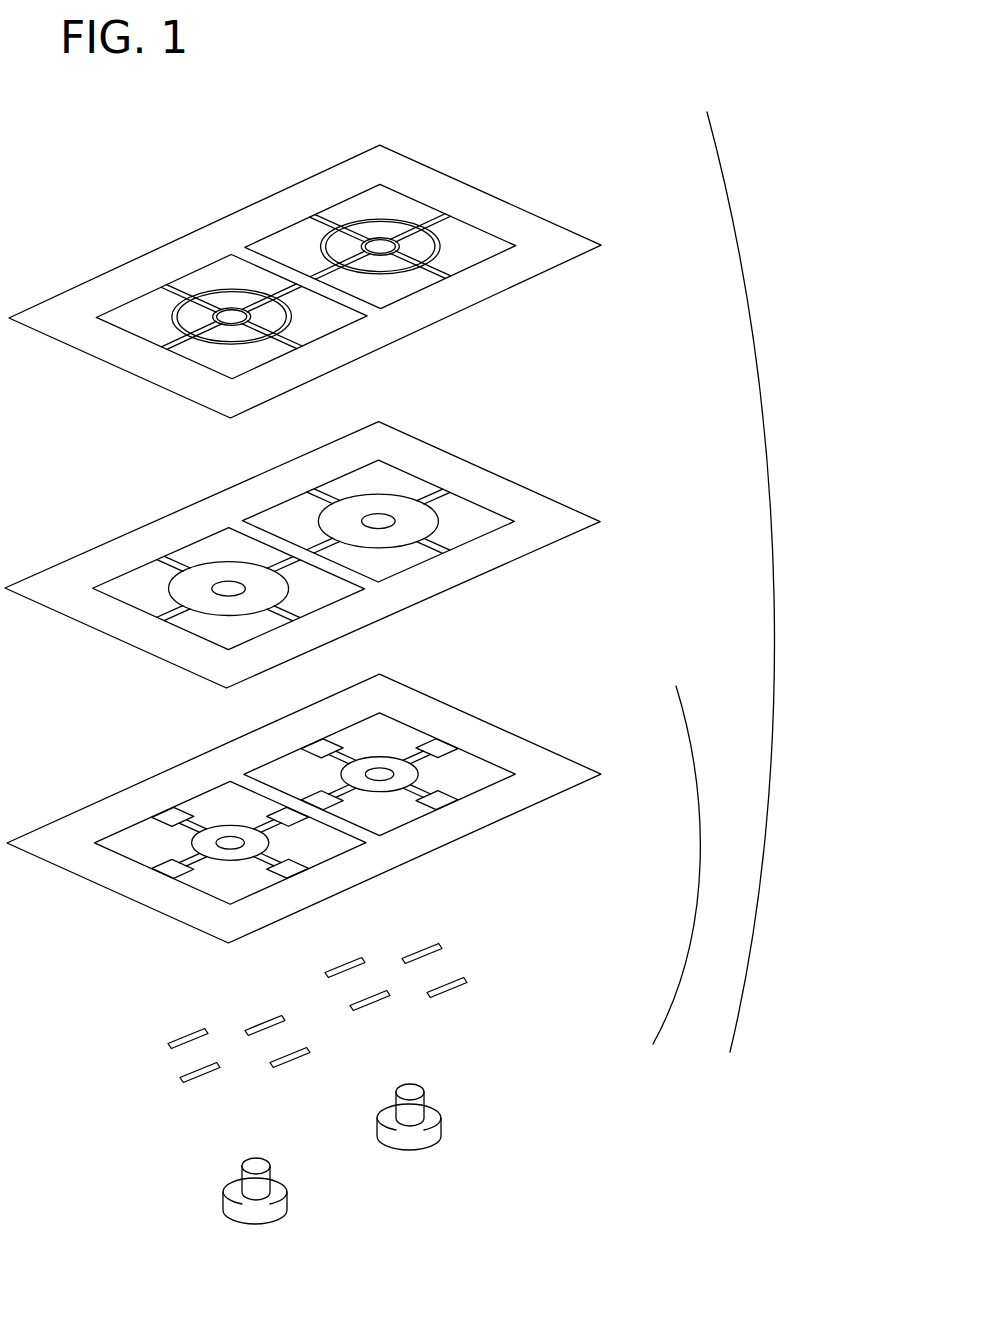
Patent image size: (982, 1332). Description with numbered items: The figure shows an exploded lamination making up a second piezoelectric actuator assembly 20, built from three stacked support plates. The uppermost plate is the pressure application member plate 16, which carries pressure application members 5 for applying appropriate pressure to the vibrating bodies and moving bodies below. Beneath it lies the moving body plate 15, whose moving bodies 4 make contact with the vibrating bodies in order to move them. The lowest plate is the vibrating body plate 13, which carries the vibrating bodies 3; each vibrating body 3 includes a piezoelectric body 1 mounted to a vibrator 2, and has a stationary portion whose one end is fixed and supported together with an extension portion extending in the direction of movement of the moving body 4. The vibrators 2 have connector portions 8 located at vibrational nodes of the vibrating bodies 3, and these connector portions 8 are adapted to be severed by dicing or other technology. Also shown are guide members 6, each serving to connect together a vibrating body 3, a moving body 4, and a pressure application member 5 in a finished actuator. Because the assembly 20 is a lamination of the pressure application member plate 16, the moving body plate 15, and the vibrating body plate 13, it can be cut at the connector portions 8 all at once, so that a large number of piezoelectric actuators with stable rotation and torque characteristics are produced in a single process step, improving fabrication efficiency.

The piezoelectric body 1 is at (188, 1035).
The vibrator 2 is at (440, 775).
The vibrating body 3 is at (692, 865).
The moving body 4 is at (420, 523).
The pressure application member 5 is at (440, 247).
The guide member 6 is at (252, 1183).
The connector portion 8 is at (322, 213).
The vibrating body plate 13 is at (603, 695).
The moving body plate 15 is at (615, 432).
The pressure application member plate 16 is at (609, 353).
The second piezoelectric actuator assembly 20 is at (769, 582).